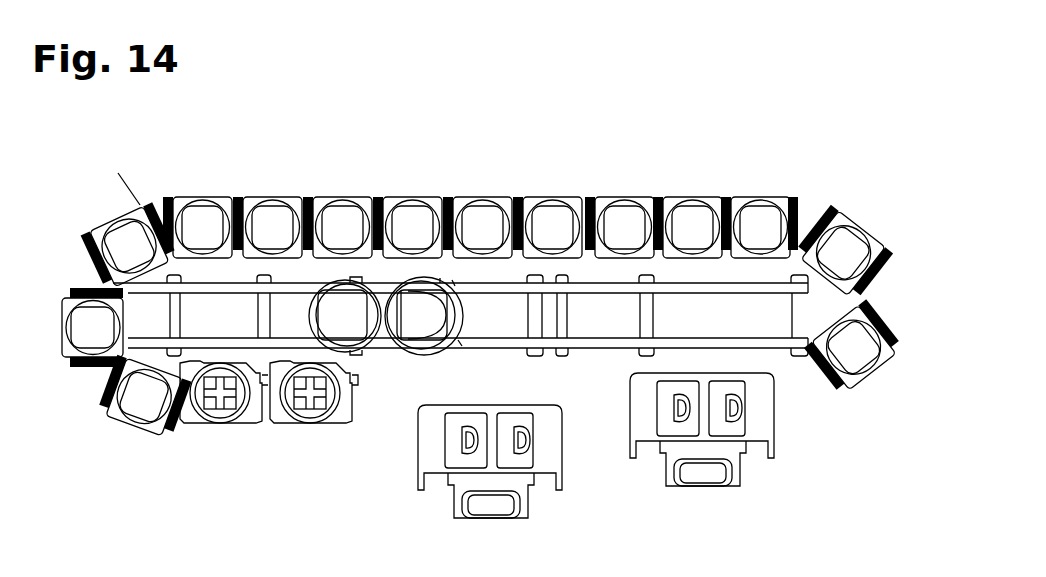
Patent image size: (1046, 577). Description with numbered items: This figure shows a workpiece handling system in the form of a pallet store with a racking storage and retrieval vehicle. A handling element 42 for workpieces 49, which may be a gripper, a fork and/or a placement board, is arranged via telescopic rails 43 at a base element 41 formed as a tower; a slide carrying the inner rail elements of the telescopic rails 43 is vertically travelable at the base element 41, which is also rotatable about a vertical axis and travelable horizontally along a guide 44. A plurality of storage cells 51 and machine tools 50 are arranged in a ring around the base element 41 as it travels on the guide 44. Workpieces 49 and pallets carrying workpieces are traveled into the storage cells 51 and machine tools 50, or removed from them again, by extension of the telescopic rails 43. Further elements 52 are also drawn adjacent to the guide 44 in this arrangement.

The storage cells 51 is at (200, 212).
The handling element 42 is at (326, 286).
The workpieces 49 is at (347, 303).
The telescopic rails 43 is at (413, 303).
The base element 41 is at (448, 287).
The guide 44 is at (607, 343).
The round connector 52 is at (197, 426).
The machine tools 50 is at (435, 463).